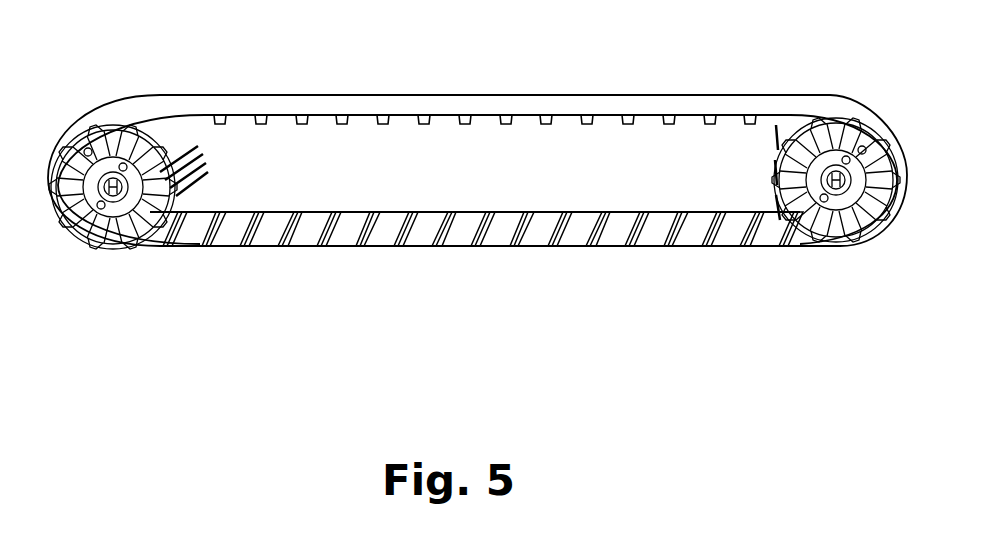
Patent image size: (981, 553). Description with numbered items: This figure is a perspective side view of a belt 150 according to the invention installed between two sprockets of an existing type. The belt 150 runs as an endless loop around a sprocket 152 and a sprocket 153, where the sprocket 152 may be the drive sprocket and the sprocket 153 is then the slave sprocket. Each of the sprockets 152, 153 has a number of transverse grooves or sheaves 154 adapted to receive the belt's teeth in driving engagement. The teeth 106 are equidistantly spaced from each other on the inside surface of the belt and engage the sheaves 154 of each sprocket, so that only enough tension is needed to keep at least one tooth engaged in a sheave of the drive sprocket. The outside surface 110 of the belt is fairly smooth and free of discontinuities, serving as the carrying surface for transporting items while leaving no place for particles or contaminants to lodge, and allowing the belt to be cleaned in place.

The belt 150 is at (322, 78).
The outside surface 110 is at (392, 105).
The teeth 106 is at (377, 209).
The sprocket 152 is at (187, 182).
The sprocket 153 is at (788, 247).
The sheaves 154 is at (200, 145).